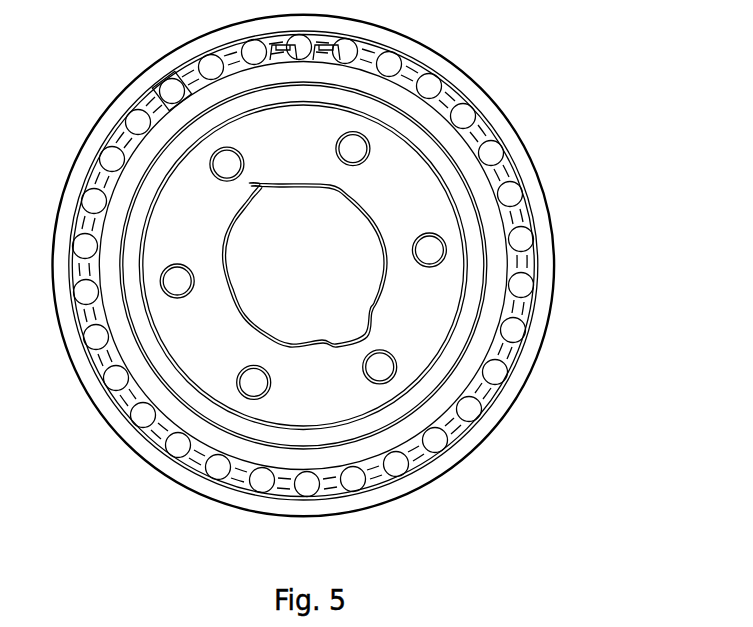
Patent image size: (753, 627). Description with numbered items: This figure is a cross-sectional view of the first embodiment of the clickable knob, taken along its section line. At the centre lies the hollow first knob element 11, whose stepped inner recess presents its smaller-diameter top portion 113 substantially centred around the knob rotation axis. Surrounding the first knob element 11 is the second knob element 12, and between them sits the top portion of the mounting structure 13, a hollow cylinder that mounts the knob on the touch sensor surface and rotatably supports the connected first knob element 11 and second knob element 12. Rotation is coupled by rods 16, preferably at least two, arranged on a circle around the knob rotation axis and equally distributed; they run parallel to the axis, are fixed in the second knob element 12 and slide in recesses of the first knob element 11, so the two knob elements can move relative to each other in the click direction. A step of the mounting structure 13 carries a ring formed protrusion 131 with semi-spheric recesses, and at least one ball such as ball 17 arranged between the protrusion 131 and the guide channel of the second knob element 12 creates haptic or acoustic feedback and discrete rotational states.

The first knob element 11 is at (400, 157).
The second knob element 12 is at (605, 378).
The mounting structure 13 is at (475, 230).
The ring formed protrusion 131 is at (525, 275).
The rods 16 is at (335, 394).
The rolling element (ball) 17 is at (434, 441).
The top portion of the inner recess 113 is at (352, 203).